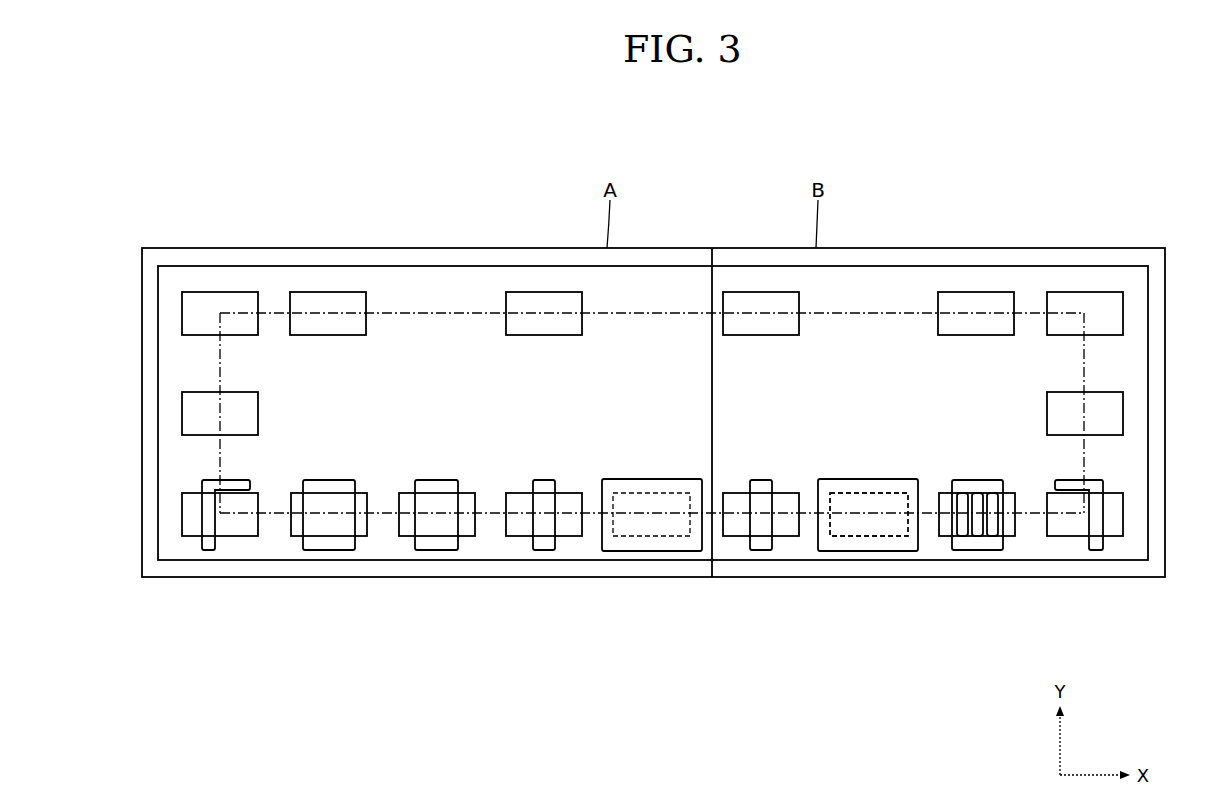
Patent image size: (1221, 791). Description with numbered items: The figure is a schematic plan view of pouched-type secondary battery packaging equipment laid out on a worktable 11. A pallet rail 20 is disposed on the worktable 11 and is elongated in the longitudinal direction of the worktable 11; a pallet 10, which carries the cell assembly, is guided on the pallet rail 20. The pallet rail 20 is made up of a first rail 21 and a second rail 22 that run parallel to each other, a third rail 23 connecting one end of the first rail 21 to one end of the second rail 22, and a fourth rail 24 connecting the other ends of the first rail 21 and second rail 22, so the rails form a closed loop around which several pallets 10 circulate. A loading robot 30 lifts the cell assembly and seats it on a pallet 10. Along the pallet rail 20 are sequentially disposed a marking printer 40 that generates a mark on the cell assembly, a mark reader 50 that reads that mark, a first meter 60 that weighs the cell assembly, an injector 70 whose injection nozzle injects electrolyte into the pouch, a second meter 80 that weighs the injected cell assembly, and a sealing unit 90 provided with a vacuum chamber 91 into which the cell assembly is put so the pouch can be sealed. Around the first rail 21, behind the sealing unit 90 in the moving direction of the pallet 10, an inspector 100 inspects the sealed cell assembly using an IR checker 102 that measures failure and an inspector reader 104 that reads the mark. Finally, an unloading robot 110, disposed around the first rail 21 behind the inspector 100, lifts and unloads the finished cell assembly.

The pallet 10 is at (653, 414).
The worktable 11 is at (428, 258).
The pallet rail 20 is at (648, 428).
The first rail 21 is at (590, 517).
The second rail 22 is at (868, 313).
The third rail 23 is at (1085, 358).
The fourth rail 24 is at (219, 358).
The loading robot 30 is at (207, 551).
The marking printer 40 is at (330, 551).
The mark reader 50 is at (434, 551).
The first meter 60 is at (544, 551).
The injector 70 is at (645, 552).
The second meter 80 is at (760, 551).
The sealing unit 90 is at (839, 562).
The vacuum chamber 91 is at (865, 537).
The inspector 100 is at (976, 572).
The IR checker 102 is at (962, 537).
The inspector reader 104 is at (977, 537).
The unloading robot 110 is at (1095, 551).